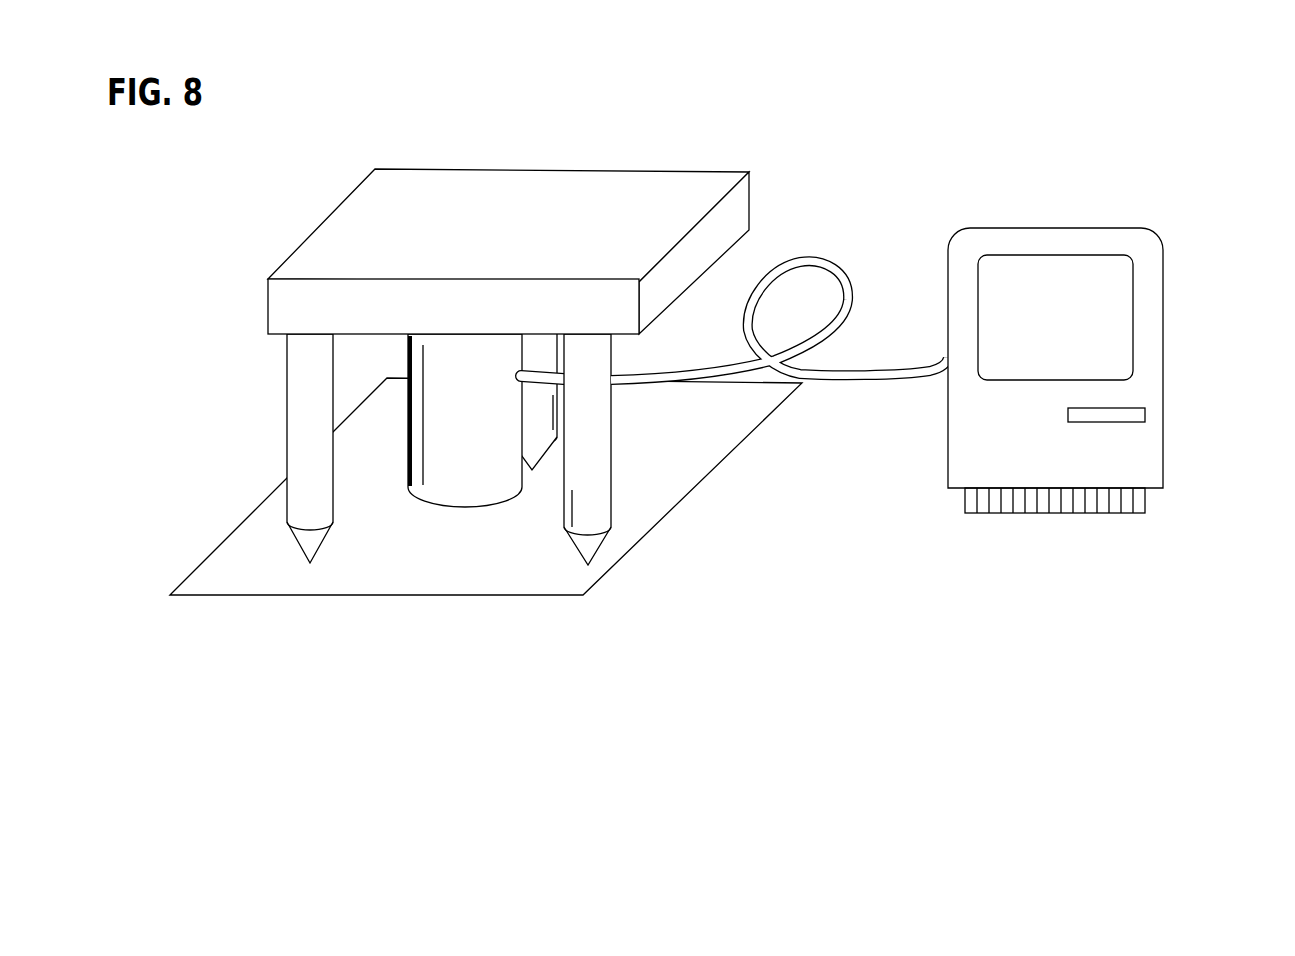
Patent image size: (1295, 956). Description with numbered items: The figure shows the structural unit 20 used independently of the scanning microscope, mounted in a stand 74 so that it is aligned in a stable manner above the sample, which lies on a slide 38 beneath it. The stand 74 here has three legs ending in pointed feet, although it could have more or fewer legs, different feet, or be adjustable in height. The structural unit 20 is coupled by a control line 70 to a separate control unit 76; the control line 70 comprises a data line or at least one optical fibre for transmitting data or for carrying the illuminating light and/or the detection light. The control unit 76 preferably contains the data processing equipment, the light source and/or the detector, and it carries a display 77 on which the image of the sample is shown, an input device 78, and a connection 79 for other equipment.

The structural unit 20 is at (459, 480).
The slide 38 is at (475, 563).
The control line 70 is at (810, 262).
The stand 74 is at (287, 378).
The control unit 76 is at (1163, 290).
The display 77 is at (1020, 382).
The input device 78 is at (1103, 422).
The connection 79 is at (1147, 500).